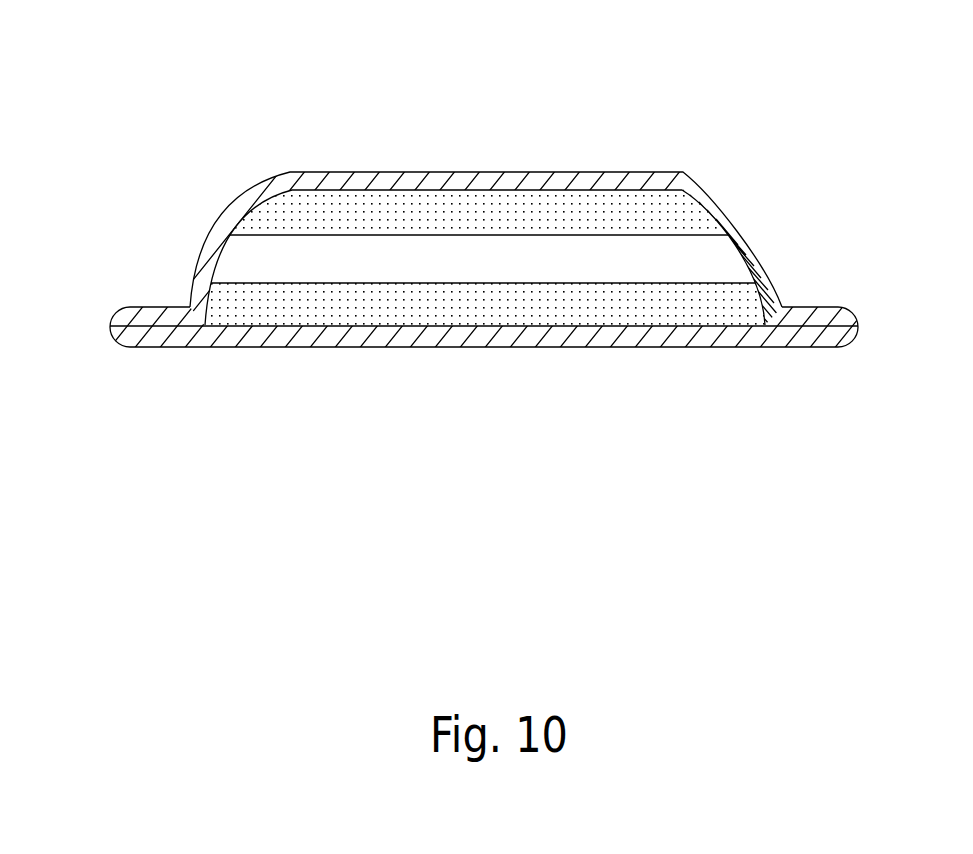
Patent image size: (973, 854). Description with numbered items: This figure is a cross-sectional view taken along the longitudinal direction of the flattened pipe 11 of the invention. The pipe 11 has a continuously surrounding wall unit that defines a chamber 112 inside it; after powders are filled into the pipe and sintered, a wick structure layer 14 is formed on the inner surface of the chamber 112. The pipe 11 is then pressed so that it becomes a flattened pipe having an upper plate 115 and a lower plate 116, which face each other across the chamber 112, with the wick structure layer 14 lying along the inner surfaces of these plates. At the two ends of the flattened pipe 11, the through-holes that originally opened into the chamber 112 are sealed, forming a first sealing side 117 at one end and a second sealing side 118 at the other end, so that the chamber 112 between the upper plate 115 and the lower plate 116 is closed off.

The pipe 11 is at (481, 234).
The upper plate 115 is at (543, 168).
The lower plate 116 is at (520, 347).
The first sealing side 117 is at (140, 307).
The second sealing side 118 is at (810, 307).
The chamber 112 is at (637, 265).
The wick structure layer 14 is at (407, 313).